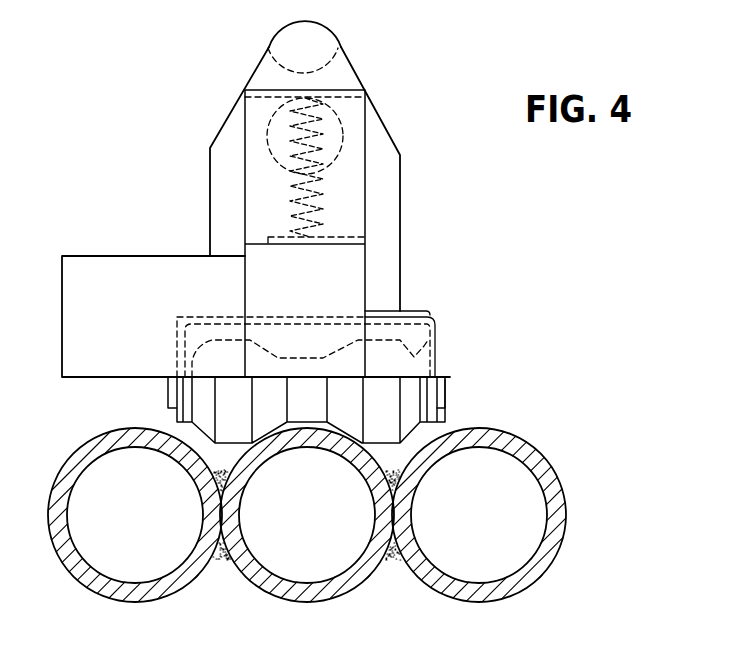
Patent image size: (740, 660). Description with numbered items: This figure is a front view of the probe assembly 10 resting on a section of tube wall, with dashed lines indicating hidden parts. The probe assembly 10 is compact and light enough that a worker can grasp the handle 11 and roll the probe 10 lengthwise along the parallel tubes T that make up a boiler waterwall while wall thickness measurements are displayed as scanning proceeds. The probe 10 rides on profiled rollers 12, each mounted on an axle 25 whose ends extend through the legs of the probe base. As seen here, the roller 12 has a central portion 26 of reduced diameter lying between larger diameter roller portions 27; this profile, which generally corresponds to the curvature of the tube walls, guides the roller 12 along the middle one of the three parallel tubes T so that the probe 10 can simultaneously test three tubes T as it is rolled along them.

The probe assembly 10 is at (193, 217).
The handle 11 is at (328, 37).
The profiled roller 12 is at (413, 398).
The axle 25 is at (448, 398).
The central portion of reduced diameter 26 is at (321, 362).
The larger diameter roller portions 27 is at (233, 318).
The tube T is at (65, 463).